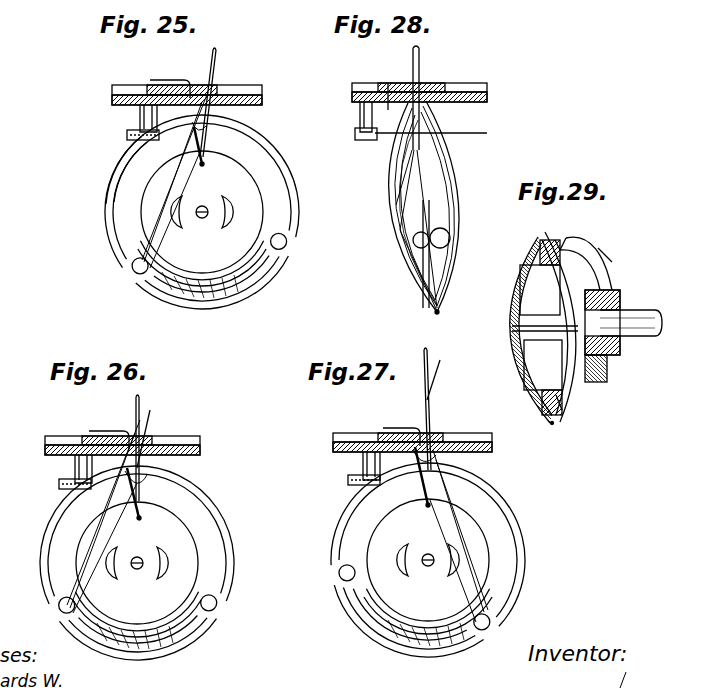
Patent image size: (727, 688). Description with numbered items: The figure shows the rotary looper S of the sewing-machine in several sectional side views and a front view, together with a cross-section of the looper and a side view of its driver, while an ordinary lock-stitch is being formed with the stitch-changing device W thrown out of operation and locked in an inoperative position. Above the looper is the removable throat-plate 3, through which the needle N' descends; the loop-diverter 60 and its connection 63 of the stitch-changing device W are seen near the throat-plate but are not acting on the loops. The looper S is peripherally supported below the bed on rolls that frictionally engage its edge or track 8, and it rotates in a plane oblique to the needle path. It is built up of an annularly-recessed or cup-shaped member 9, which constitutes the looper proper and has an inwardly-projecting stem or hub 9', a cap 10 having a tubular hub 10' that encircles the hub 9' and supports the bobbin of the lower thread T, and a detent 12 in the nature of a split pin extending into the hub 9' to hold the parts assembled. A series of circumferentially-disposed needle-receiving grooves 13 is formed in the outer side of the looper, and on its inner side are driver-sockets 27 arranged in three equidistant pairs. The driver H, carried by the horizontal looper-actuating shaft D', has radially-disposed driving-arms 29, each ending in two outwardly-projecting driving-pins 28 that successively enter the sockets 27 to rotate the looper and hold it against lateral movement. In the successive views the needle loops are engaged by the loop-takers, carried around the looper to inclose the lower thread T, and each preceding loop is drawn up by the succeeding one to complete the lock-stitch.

In FIG. 25, the throat-plate 3 is at (174, 96).
In FIG. 26, the throat-plate 3 is at (108, 446).
In FIG. 27, the throat-plate 3 is at (397, 444).
In FIG. 28, the throat-plate 3 is at (354, 92).
In FIG. 25, the edge or track of the looper 8 is at (202, 220).
In FIG. 26, the edge or track of the looper 8 is at (137, 572).
In FIG. 27, the edge or track of the looper 8 is at (428, 570).
In FIG. 28, the edge or track of the looper 8 is at (436, 323).
In FIG. 29, the edge or track of the looper 8 is at (553, 424).
In FIG. 25, the cup-shaped member 9 is at (211, 291).
In FIG. 26, the cup-shaped member 9 is at (163, 572).
In FIG. 27, the cup-shaped member 9 is at (398, 618).
In FIG. 28, the cup-shaped member 9 is at (400, 253).
In FIG. 29, the cup-shaped member 9 is at (573, 399).
In FIG. 25, the cap 10 is at (202, 269).
In FIG. 26, the cap 10 is at (137, 629).
In FIG. 27, the cap 10 is at (428, 617).
In FIG. 28, the cap 10 is at (401, 211).
In FIG. 29, the cap 10 is at (516, 330).
In FIG. 25, the detent 12 is at (203, 197).
In FIG. 26, the detent 12 is at (142, 550).
In FIG. 27, the detent 12 is at (432, 546).
In FIG. 29, the detent 12 is at (512, 328).
In FIG. 25, the needle-receiving grooves 13 is at (181, 201).
In FIG. 26, the needle-receiving grooves 13 is at (116, 555).
In FIG. 27, the needle-receiving grooves 13 is at (413, 574).
In FIG. 28, the needle-receiving grooves 13 is at (404, 148).
In FIG. 29, the needle-receiving grooves 13 is at (538, 240).
In FIG. 29, the driver-sockets 27 is at (560, 240).
In FIG. 29, the driving-pins 28 is at (582, 238).
In FIG. 29, the driving-arms 29 is at (606, 258).
In FIG. 25, the loop-diverter 60 is at (166, 123).
In FIG. 26, the loop-diverter 60 is at (105, 428).
In FIG. 27, the loop-diverter 60 is at (401, 426).
In FIG. 28, the loop-diverter 60 is at (390, 83).
In FIG. 25, the connection 63 is at (121, 143).
In FIG. 26, the connection 63 is at (51, 489).
In FIG. 27, the connection 63 is at (340, 486).
In FIG. 25, the rotary looper S is at (202, 212).
In FIG. 26, the rotary looper S is at (137, 563).
In FIG. 27, the rotary looper S is at (428, 560).
In FIG. 28, the rotary looper S is at (412, 206).
In FIG. 29, the rotary looper S is at (530, 327).
In FIG. 25, the lower thread T is at (210, 144).
In FIG. 26, the lower thread T is at (146, 494).
In FIG. 27, the lower thread T is at (415, 477).
In FIG. 25, the stitch-changing device W is at (135, 118).
In FIG. 26, the stitch-changing device W is at (68, 469).
In FIG. 27, the stitch-changing device W is at (355, 466).
In FIG. 28, the stitch-changing device W is at (358, 120).
In FIG. 29, the rotary driver H is at (590, 296).
In FIG. 25, the needle N' is at (179, 158).
In FIG. 26, the needle N' is at (108, 502).
In FIG. 27, the needle N' is at (441, 485).
In FIG. 28, the needle N' is at (420, 176).
In FIG. 29, the looper-actuating shaft D' is at (631, 311).
In FIG. 29, the stem or hub 9' is at (543, 365).
In FIG. 29, the tubular hub 10' is at (540, 290).